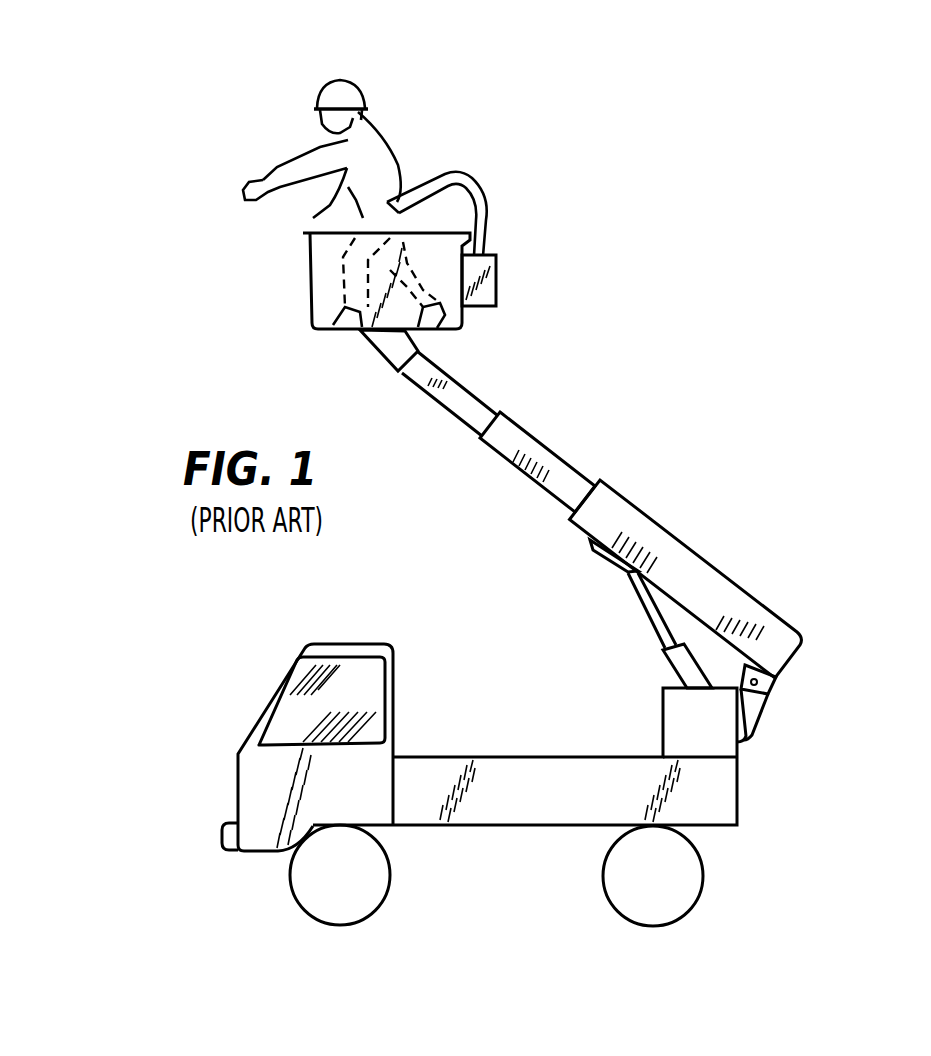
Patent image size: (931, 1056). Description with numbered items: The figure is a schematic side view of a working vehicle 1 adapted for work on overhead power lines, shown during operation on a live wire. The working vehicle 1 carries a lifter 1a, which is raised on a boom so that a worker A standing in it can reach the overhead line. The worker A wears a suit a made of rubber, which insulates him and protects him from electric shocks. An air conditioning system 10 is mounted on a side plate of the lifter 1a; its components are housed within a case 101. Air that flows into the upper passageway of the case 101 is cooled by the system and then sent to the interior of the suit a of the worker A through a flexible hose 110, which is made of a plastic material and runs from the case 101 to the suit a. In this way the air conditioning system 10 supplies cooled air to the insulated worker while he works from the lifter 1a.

The working vehicle 1 is at (550, 748).
The lifter 1a is at (327, 332).
The worker A is at (344, 177).
The suit a is at (382, 173).
The air conditioning system 10 is at (475, 196).
The case 101 is at (497, 270).
The flexible hose 110 is at (480, 183).